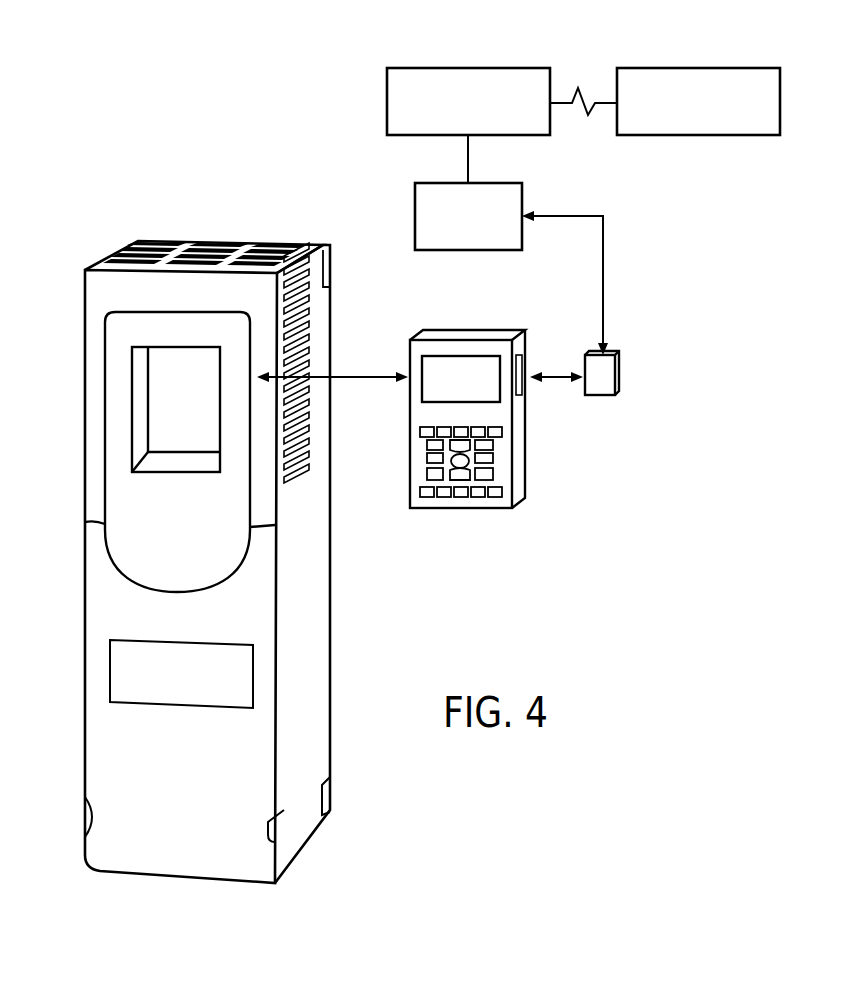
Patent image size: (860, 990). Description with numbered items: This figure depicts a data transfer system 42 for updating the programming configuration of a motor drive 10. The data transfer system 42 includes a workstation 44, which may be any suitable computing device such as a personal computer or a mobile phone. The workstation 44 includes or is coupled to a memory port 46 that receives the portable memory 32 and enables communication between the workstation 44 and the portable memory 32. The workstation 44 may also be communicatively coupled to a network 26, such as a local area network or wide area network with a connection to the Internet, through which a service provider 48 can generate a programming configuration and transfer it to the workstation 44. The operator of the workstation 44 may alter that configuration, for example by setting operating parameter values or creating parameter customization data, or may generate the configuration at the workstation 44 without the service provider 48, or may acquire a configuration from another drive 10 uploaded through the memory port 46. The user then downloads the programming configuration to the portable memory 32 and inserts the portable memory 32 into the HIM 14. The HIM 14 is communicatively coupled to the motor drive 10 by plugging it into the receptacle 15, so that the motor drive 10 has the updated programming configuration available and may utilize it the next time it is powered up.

The motor drive 10 is at (97, 293).
The HIM 14 is at (500, 332).
The receptacle 15 is at (135, 420).
The network 26 is at (588, 98).
The portable memory 32 is at (598, 397).
The data transfer system 42 is at (214, 122).
The workstation 44 is at (467, 68).
The memory port 46 is at (415, 217).
The service provider 48 is at (700, 68).